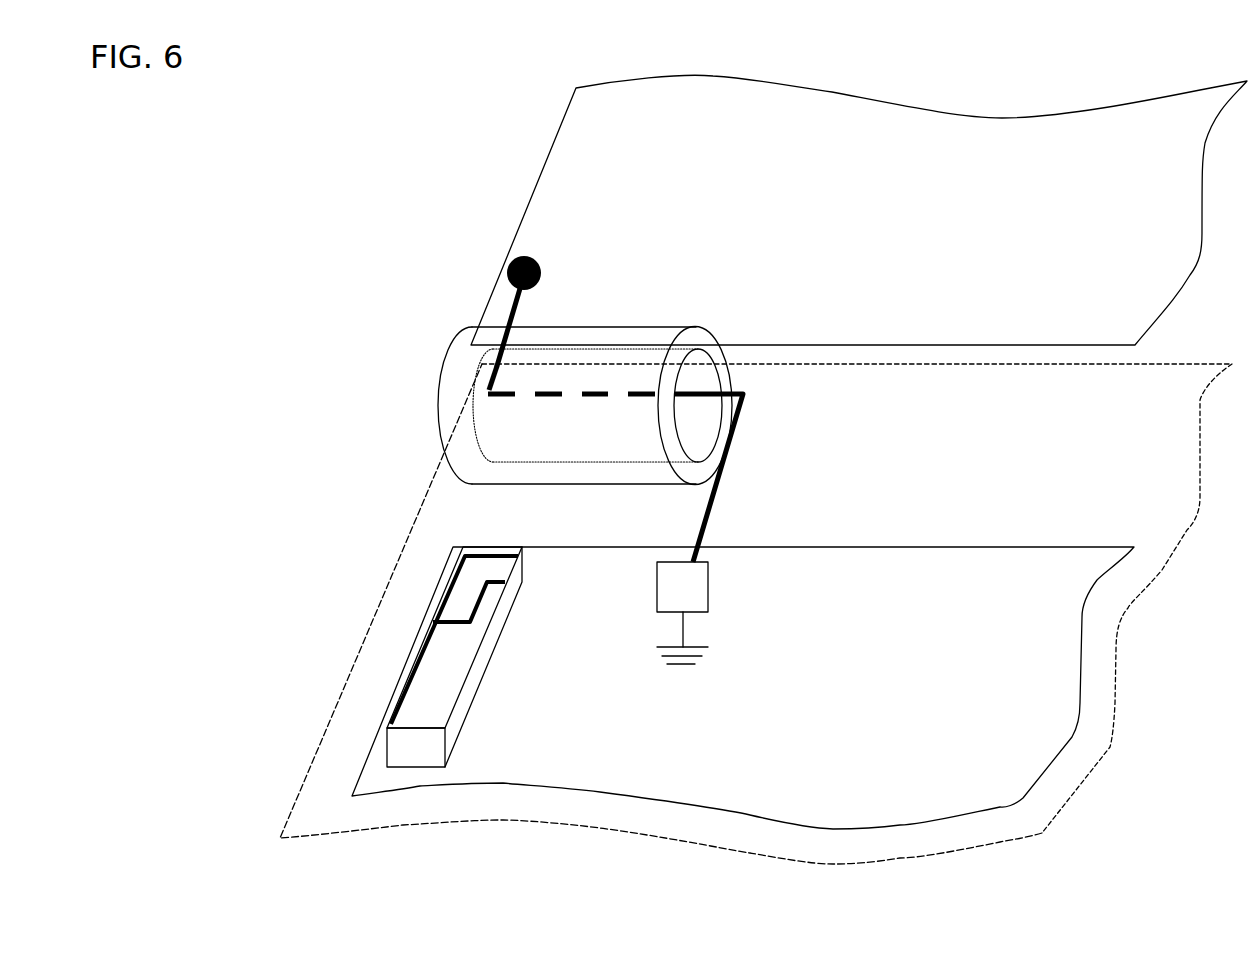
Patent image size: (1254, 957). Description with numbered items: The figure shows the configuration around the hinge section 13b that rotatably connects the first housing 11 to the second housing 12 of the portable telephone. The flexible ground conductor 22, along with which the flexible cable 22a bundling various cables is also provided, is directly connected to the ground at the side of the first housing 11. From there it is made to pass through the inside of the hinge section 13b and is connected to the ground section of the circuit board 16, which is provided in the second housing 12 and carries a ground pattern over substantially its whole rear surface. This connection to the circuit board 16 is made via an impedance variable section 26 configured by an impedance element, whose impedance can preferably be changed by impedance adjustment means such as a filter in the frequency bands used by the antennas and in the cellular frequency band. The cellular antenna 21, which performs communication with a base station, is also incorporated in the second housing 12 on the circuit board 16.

The first housing 11 is at (577, 202).
The second housing 12 is at (1054, 743).
The hinge section 13b is at (468, 356).
The circuit board 16 is at (588, 563).
The cellular antenna 21 is at (472, 630).
The flexible ground conductor 22 is at (665, 409).
The flexible cable 22a is at (519, 311).
The impedance variable section 26 is at (705, 597).